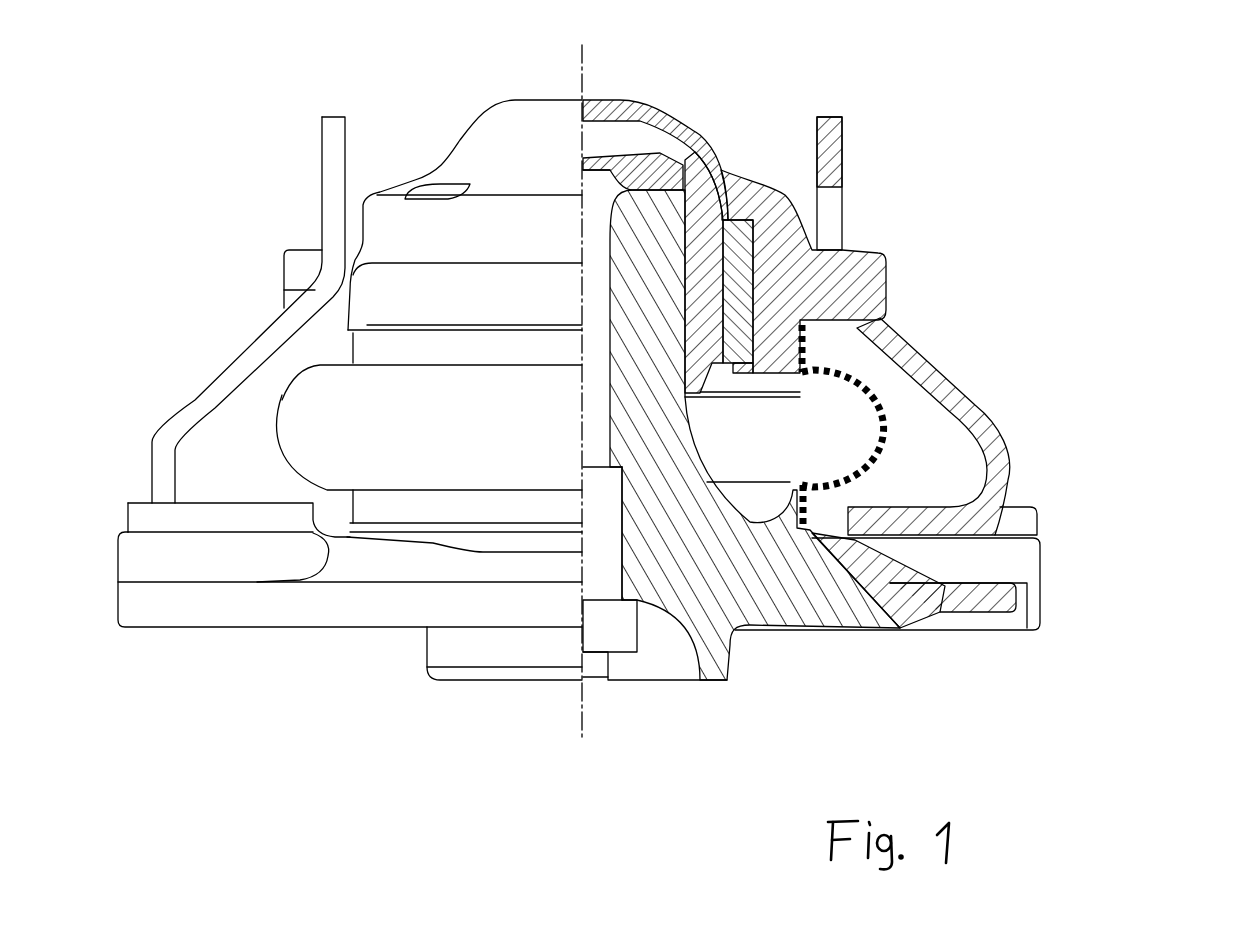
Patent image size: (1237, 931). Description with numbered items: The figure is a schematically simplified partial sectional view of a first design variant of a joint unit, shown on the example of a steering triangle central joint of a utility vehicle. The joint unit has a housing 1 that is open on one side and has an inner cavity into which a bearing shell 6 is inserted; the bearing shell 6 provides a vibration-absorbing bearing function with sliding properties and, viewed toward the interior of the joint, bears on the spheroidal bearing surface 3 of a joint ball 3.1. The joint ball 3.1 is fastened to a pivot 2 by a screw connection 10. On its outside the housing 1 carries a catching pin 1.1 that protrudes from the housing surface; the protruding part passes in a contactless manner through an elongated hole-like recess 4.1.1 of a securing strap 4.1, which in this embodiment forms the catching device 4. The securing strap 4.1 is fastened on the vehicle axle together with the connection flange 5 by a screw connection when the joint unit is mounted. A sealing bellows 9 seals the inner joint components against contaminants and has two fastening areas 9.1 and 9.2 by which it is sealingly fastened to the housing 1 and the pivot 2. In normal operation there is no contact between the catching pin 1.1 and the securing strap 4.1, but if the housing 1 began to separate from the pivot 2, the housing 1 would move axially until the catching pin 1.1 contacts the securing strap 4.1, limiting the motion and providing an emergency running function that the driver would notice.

The housing 1 is at (615, 108).
The catching pin 1.1 is at (782, 302).
The pivot 2 is at (638, 264).
The spheroidal bearing surface 3 is at (717, 370).
The joint ball 3.1 is at (648, 163).
The catching device 4 is at (1025, 522).
The securing strap 4.1 is at (997, 490).
The recess 4.1.1 is at (829, 190).
The connection flange 5 is at (1027, 617).
The bearing shell 6 is at (738, 280).
The sealing bellows 9 is at (873, 452).
The fastening area 9.1 is at (792, 340).
The fastening area 9.2 is at (803, 523).
The screw connection 10 is at (616, 635).